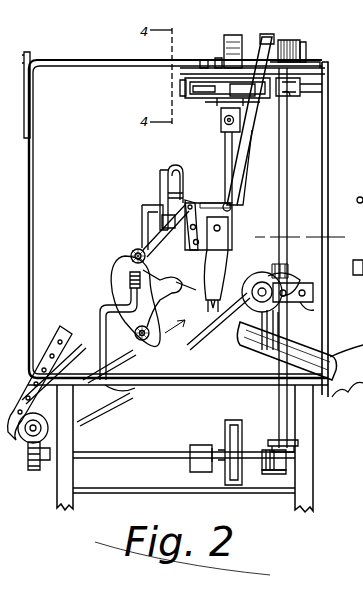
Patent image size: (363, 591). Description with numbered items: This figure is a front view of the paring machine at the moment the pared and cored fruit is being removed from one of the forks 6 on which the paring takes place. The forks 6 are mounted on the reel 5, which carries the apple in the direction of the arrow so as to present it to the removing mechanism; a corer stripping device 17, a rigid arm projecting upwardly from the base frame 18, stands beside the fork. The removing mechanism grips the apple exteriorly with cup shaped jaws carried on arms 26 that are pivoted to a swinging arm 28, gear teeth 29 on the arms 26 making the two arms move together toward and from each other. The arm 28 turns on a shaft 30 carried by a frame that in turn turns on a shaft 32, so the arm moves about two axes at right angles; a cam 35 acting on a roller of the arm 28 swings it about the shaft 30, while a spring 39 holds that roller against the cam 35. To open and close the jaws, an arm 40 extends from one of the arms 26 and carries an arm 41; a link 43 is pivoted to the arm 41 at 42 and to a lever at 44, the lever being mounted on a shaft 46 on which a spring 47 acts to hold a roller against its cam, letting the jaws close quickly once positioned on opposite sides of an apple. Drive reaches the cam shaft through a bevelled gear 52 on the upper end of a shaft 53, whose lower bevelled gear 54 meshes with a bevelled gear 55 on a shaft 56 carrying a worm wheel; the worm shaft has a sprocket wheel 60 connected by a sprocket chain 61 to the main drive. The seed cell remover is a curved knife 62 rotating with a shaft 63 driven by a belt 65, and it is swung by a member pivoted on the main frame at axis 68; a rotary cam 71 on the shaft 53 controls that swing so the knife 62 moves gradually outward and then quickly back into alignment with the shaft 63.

The reel 5 is at (130, 285).
The forks or supporting devices 6 is at (135, 252).
The corer stripping device 17 is at (107, 308).
The base frame 18 is at (308, 470).
The arms 26 is at (215, 265).
The swinging arm 28 is at (222, 142).
The gear teeth 29 is at (184, 168).
The shaft 30 is at (222, 117).
The shaft 32 is at (185, 90).
The cam 35 is at (222, 40).
The spring 39 is at (238, 138).
The arm 40 is at (183, 212).
The arm 41 is at (210, 200).
The pivot 42 is at (236, 205).
The link 43 is at (242, 172).
The pivot 44 is at (262, 38).
The shaft 46 is at (303, 42).
The spring 47 is at (282, 42).
The bevelled gear 52 is at (300, 87).
The shaft 53 is at (288, 186).
The bevelled gear 54 is at (290, 455).
The bevelled gear 55 is at (292, 472).
The shaft 56 is at (192, 470).
The sprocket wheel 60 is at (40, 395).
The sprocket chain 61 is at (66, 330).
The curved knife 62 is at (242, 300).
The shaft 63 is at (285, 285).
The belt 65 is at (100, 408).
The axis 68 is at (307, 307).
The rotary cam 71 is at (284, 268).